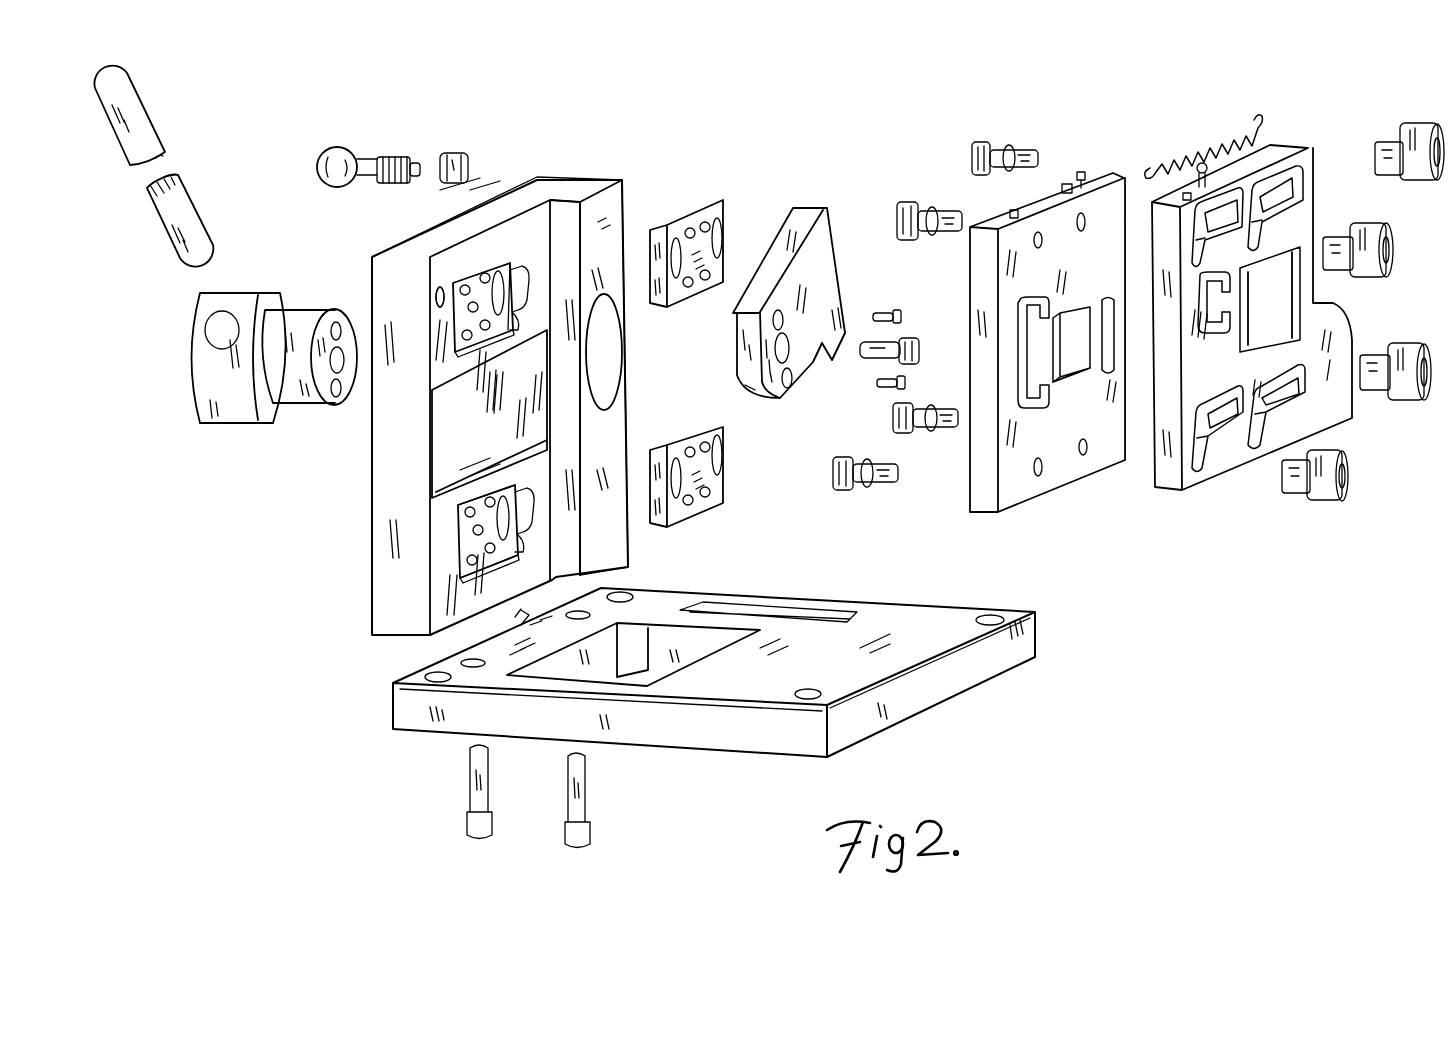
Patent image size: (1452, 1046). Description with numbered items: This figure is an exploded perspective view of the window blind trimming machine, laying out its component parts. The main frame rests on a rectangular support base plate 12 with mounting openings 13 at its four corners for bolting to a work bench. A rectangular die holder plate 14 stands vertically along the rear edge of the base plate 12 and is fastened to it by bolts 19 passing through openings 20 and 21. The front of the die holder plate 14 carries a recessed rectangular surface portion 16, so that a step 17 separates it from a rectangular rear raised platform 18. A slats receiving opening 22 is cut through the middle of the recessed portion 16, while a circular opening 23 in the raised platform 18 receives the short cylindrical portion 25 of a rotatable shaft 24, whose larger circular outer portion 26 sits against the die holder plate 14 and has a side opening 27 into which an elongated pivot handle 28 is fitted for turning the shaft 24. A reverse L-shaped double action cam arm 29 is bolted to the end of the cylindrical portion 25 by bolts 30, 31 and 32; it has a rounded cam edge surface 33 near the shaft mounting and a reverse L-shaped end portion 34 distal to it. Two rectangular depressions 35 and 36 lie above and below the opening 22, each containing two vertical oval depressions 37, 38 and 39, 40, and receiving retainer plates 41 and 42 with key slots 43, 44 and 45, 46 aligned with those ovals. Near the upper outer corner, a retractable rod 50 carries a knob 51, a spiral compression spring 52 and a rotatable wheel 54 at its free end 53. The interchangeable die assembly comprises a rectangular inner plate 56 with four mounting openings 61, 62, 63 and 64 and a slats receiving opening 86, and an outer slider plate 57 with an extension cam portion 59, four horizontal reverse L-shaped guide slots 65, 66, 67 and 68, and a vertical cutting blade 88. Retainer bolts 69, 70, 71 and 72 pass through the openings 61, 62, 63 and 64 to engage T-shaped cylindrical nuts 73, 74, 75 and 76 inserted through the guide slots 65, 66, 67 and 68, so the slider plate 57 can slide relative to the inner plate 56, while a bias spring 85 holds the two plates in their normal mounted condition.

The support base plate 12 is at (682, 671).
The mounting openings 13 is at (393, 690).
The die holder plate 14 is at (372, 470).
The recessed rectangular surface portion 16 is at (477, 230).
The step 17 is at (566, 217).
The rectangular rear raised platform 18 is at (612, 207).
The bolts 19 is at (477, 797).
The opening 20 is at (460, 661).
The opening 21 is at (565, 606).
The slats receiving opening 22 is at (443, 455).
The circular opening 23 is at (607, 370).
The rotatable shaft 24 is at (219, 392).
The cylindrical portion 25 is at (297, 395).
The circular outer portion 26 is at (218, 424).
The opening 27 is at (224, 330).
The pivot handle 28 is at (178, 172).
The double action cam arm 29 is at (772, 283).
The bolt 30 is at (917, 345).
The bolt 31 is at (882, 312).
The bolt 32 is at (905, 382).
The rounded cam edge surface 33 is at (745, 353).
The reverse L-shaped end portion 34 is at (826, 362).
The rectangular depression 35 is at (493, 258).
The rectangular depression 36 is at (460, 570).
The vertical oval shaped depression 37 is at (436, 300).
The vertical oval shaped depression 38 is at (524, 262).
The vertical oval shaped depression 39 is at (462, 528).
The vertical oval shaped depression 40 is at (460, 503).
The retainer plate 41 is at (711, 218).
The retainer plate 42 is at (437, 290).
The key slot 43 is at (680, 218).
The key slot 44 is at (727, 233).
The key slot 45 is at (722, 457).
The key slot 46 is at (724, 452).
The retractable rod 50 is at (356, 118).
The knob 51 is at (328, 150).
The spiral compression spring 52 is at (383, 157).
The free end 53 is at (417, 162).
The rotatable wheel 54 is at (458, 152).
The inner plate 56 is at (1035, 336).
The outer slider plate 57 is at (1285, 173).
The extension cam portion 59 is at (1253, 306).
The mounting opening 61 is at (1035, 243).
The mounting opening 62 is at (1078, 218).
The mounting opening 63 is at (1038, 478).
The mounting opening 64 is at (1083, 455).
The horizontal reverse L-shaped guide slot 65 is at (1197, 222).
The horizontal reverse L-shaped guide slot 66 is at (1290, 150).
The horizontal reverse L-shaped guide slot 67 is at (1297, 403).
The horizontal reverse L-shaped guide slot 68 is at (1222, 447).
The retainer bolt 69 is at (910, 212).
The retainer bolt 70 is at (993, 143).
The retainer bolt 71 is at (913, 430).
The retainer bolt 72 is at (852, 488).
The T-shaped cylindrical nut 73 is at (1377, 273).
The T-shaped cylindrical nut 74 is at (1400, 133).
The T-shaped cylindrical nut 75 is at (1402, 397).
The T-shaped cylindrical nut 76 is at (1313, 490).
The bias spring 85 is at (1190, 135).
The slats receiving opening 86 is at (1087, 368).
The vertical cutting blade 88 is at (1263, 263).